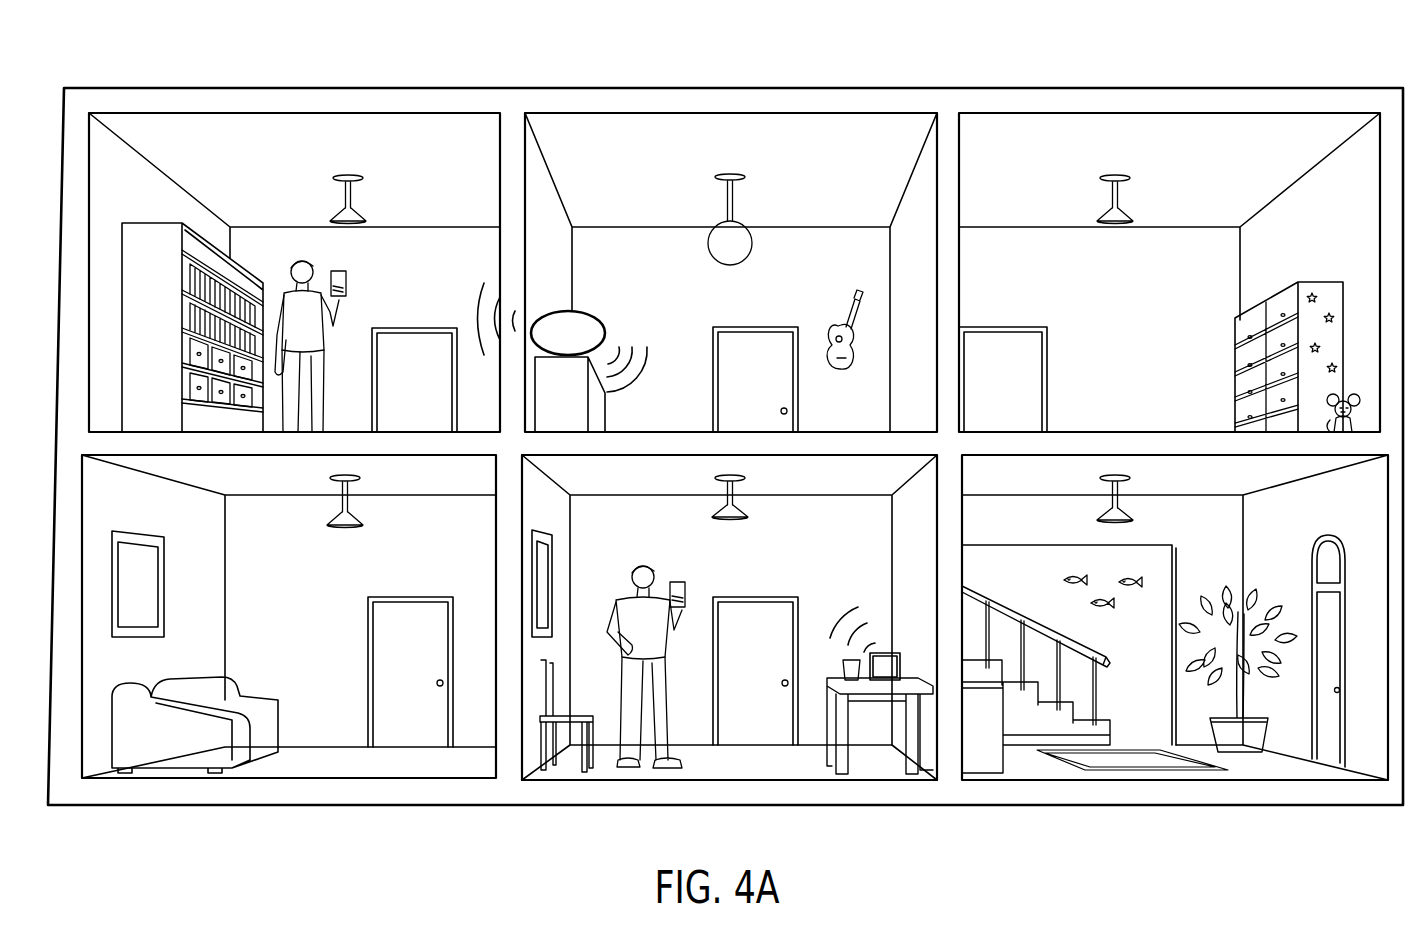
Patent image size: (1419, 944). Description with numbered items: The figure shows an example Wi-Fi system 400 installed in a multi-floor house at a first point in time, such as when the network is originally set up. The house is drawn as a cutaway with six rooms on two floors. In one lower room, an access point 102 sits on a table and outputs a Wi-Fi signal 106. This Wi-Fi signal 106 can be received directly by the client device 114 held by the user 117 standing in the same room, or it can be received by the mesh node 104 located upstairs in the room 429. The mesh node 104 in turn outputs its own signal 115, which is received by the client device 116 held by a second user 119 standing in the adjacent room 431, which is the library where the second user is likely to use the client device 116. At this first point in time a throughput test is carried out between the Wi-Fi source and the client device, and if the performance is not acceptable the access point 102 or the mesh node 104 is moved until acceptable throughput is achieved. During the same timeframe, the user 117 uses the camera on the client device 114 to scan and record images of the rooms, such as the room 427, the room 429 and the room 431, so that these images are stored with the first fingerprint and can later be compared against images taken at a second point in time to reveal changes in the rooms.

The house environment 400 is at (1200, 33).
The room 431 is at (403, 133).
The room 429 is at (810, 133).
The room 427 is at (782, 767).
The second user 119 is at (302, 260).
The client device 116 is at (346, 282).
The signal 115 is at (483, 313).
The mesh node 104 is at (596, 315).
The user 117 is at (645, 568).
The client device 114 is at (679, 583).
The Wi-Fi signal 106 is at (854, 607).
The access point 102 is at (902, 662).